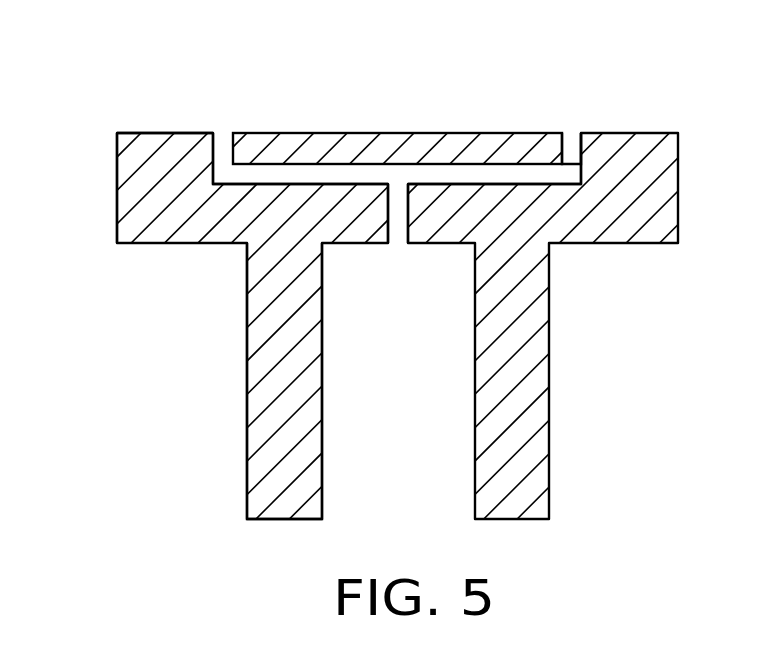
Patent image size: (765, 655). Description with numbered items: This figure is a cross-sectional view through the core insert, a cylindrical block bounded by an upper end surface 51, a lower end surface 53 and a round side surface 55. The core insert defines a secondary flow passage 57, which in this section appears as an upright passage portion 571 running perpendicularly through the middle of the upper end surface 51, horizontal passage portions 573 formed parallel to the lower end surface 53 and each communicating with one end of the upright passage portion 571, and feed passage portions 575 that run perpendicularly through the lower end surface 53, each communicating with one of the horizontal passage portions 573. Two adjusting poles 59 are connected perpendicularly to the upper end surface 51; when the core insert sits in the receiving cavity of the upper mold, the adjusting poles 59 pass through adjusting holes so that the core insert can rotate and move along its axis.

The upper end surface 51 is at (152, 243).
The lower end surface 53 is at (167, 133).
The round side surface 55 is at (117, 201).
The secondary flow passage 57 is at (617, 42).
The upright passage portion 571 is at (398, 197).
The horizontal passage portion 573 is at (465, 177).
The feed passage portion 575 is at (573, 138).
The adjusting pole 59 is at (273, 449).